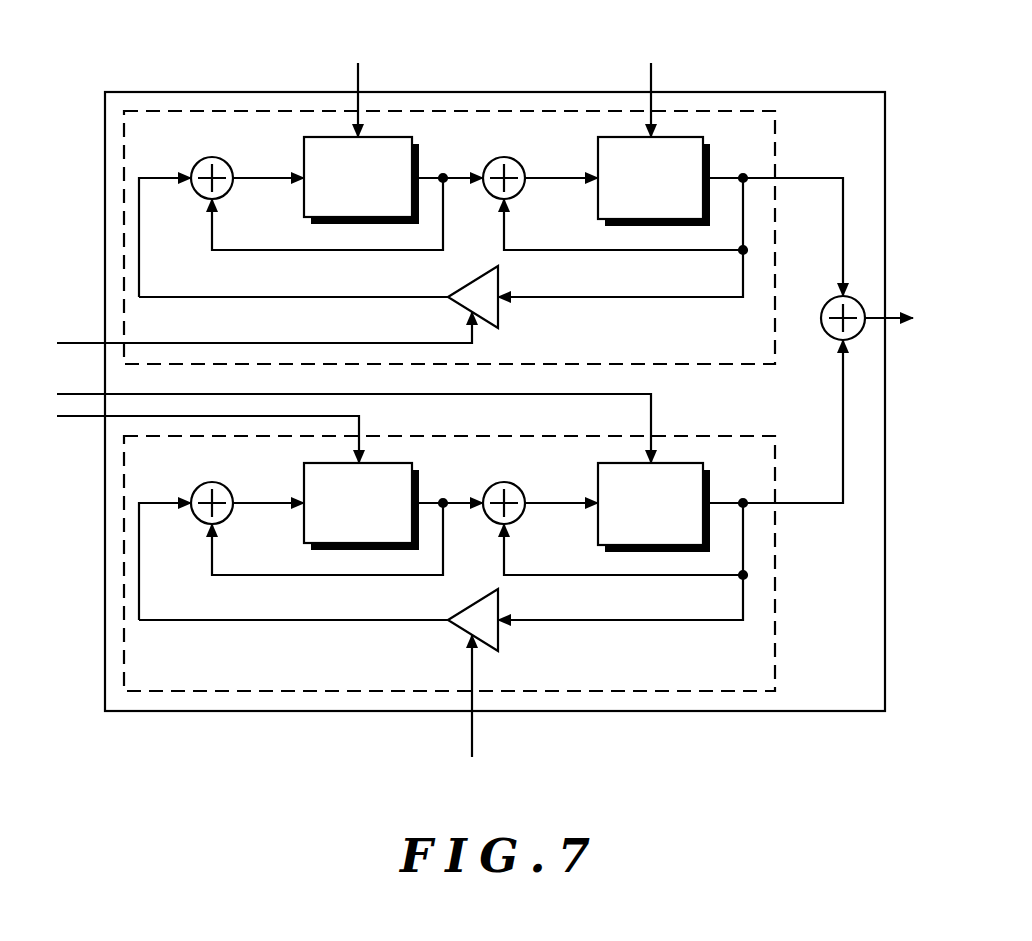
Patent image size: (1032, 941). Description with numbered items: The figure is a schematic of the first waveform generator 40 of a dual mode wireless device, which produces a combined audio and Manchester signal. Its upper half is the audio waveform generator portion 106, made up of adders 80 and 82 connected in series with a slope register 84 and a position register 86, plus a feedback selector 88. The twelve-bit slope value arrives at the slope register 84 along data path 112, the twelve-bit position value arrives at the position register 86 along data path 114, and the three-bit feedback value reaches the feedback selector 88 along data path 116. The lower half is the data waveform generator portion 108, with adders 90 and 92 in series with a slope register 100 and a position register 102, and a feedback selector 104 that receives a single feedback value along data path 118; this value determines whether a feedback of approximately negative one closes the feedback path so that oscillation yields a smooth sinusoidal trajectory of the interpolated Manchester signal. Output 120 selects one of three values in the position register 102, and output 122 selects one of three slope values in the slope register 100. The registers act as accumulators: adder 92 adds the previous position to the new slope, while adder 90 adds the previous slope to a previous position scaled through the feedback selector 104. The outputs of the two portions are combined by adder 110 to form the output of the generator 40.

The first waveform generator 40 is at (836, 92).
The audio waveform generator portion 106 is at (775, 137).
The data waveform generator portion 108 is at (776, 577).
The adder 80 is at (207, 157).
The adder 82 is at (499, 157).
The slope register 84 is at (304, 151).
The position register 86 is at (598, 151).
The feedback selector 88 is at (478, 276).
The adder 90 is at (207, 482).
The adder 92 is at (499, 483).
The slope register 100 is at (304, 477).
The position register 102 is at (598, 478).
The feedback selector 104 is at (478, 600).
The adder 110 is at (824, 307).
The data path 112 is at (357, 70).
The data path 114 is at (650, 70).
The data path 116 is at (78, 343).
The data path 118 is at (472, 741).
The output of state logic unit 120 is at (78, 394).
The output of state logic unit 122 is at (77, 419).